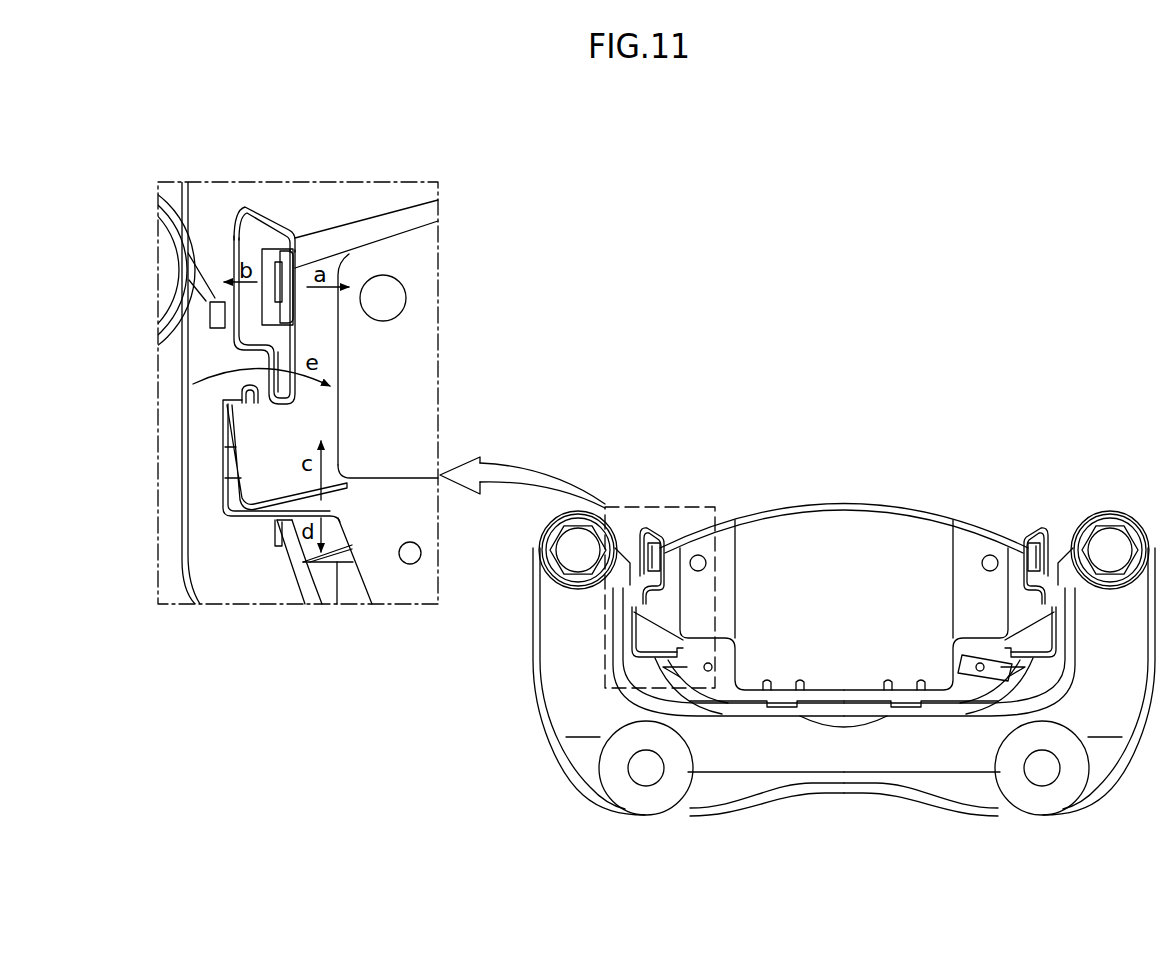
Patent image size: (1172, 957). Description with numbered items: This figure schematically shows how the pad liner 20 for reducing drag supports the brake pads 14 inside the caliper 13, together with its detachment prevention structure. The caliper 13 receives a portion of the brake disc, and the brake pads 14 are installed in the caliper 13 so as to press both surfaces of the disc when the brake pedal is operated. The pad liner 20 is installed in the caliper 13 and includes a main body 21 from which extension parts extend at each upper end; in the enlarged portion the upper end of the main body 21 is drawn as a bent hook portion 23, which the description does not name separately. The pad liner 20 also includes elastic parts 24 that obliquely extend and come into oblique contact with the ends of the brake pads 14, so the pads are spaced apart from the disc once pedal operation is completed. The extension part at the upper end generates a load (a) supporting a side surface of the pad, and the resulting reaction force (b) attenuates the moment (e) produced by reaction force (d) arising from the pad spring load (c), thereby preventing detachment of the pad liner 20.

The caliper 13 is at (778, 758).
The brake pads 14 is at (402, 397).
The pad liner 20 is at (659, 512).
The main body 21 is at (235, 246).
The hook portion 23 is at (277, 222).
The elastic parts 24 is at (290, 305).